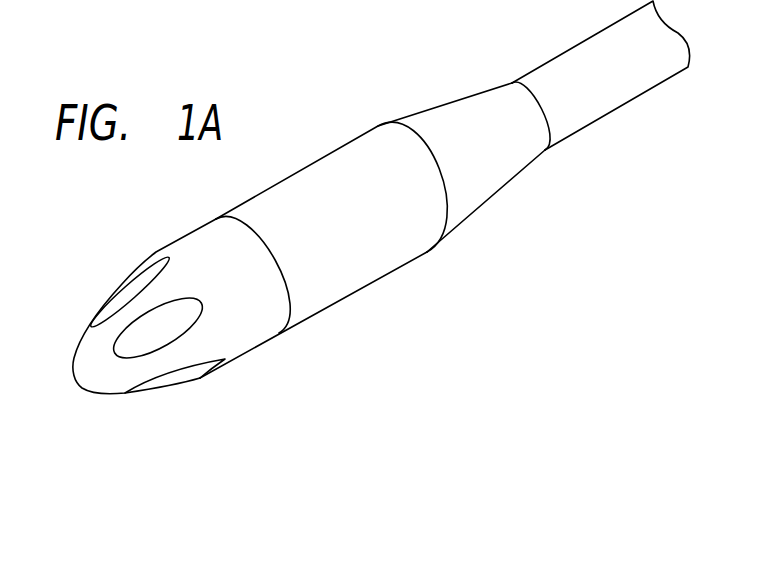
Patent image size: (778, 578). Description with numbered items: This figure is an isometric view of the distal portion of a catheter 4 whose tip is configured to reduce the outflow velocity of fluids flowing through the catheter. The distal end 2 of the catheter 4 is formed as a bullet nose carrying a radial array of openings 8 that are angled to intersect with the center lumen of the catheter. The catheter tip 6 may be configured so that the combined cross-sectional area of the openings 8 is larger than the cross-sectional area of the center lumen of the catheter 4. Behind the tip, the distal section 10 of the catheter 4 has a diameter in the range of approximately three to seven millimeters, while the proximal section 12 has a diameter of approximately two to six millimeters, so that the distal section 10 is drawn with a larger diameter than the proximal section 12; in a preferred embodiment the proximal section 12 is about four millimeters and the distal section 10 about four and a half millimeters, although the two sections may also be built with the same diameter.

The distal end 2 is at (349, 231).
The catheter 4 is at (318, 114).
The catheter tip 6 is at (139, 217).
The openings 8 is at (131, 288).
The distal section 10 is at (404, 318).
The proximal section 12 is at (623, 137).